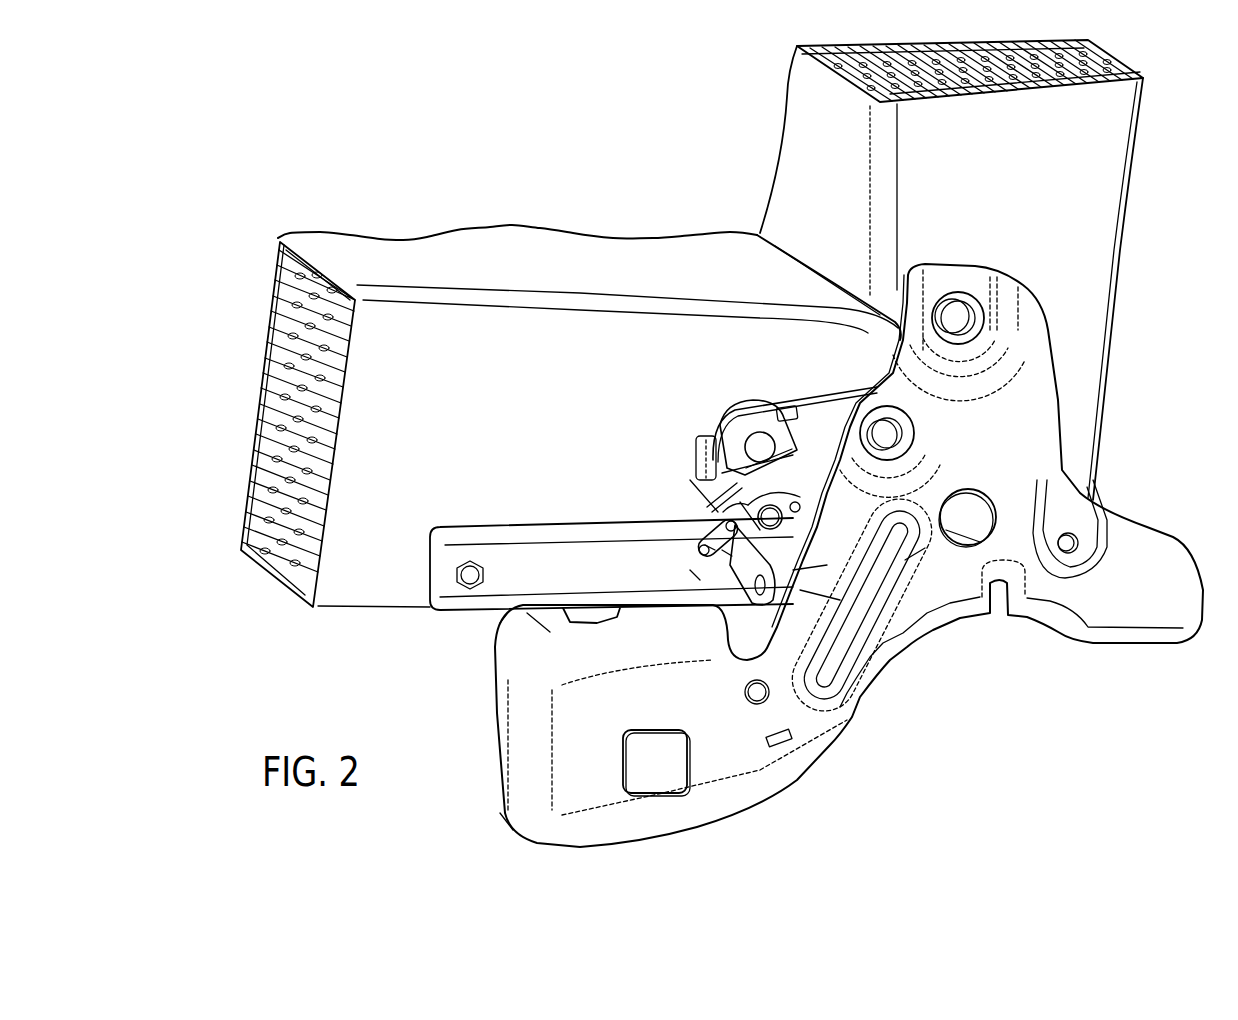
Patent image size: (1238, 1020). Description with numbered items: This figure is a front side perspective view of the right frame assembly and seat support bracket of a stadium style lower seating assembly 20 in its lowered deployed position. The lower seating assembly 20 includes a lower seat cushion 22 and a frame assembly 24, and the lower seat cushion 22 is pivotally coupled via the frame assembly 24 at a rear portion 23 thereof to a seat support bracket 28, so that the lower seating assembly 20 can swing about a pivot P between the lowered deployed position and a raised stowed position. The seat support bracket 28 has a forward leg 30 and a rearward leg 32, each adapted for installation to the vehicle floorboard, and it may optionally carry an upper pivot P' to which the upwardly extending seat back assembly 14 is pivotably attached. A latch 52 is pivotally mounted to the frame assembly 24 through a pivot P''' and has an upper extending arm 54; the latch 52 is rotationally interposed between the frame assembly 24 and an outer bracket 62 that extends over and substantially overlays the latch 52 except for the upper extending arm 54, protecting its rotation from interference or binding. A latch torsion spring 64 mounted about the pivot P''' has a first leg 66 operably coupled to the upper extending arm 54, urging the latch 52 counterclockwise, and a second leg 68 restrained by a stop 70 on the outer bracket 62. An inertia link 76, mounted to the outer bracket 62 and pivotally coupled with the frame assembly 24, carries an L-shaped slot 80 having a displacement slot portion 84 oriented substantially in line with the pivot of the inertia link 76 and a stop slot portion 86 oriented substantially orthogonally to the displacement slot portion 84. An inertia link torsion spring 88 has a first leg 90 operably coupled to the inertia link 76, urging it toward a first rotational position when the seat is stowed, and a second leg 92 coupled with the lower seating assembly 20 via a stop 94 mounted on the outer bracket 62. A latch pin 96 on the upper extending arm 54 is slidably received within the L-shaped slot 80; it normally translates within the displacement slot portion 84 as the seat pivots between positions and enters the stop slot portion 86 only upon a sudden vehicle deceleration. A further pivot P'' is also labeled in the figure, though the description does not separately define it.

The upwardly extending seat back assembly 14 is at (1120, 257).
The lower seating assembly 20 is at (353, 580).
The lower seat cushion 22 is at (512, 240).
The rear portion 23 is at (637, 583).
The frame assembly 24 is at (545, 537).
The seat support bracket 28 is at (750, 780).
The forward leg 30 is at (572, 830).
The rearward leg 32 is at (1107, 640).
The latch 52 is at (712, 505).
The upper extending arm 54 is at (750, 557).
The outer bracket 62 is at (817, 413).
The latch torsion spring 64 is at (723, 433).
The first leg 66 is at (690, 447).
The second leg 68 is at (777, 413).
The stop 70 is at (787, 413).
The inertia link 76 is at (700, 552).
The L-shaped slot 80 is at (710, 550).
The displacement slot portion 84 is at (693, 575).
The stop slot portion 86 is at (740, 502).
The inertia link torsion spring 88 is at (787, 493).
The first leg 90 is at (767, 523).
The second leg 92 is at (775, 495).
The stop 94 is at (797, 510).
The latch pin 96 is at (727, 553).
The pivot P is at (890, 414).
The upper pivot P' is at (959, 311).
The pivot point P'' is at (747, 394).
The pivot P''' is at (678, 489).